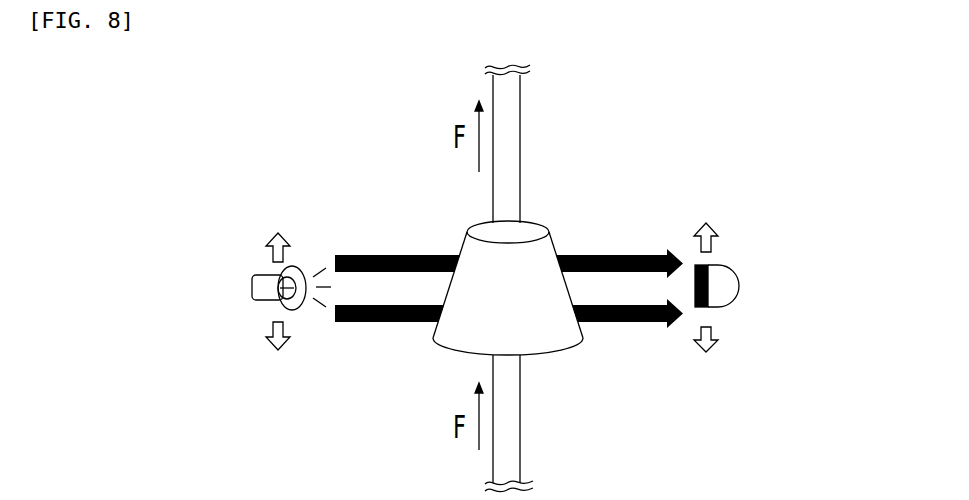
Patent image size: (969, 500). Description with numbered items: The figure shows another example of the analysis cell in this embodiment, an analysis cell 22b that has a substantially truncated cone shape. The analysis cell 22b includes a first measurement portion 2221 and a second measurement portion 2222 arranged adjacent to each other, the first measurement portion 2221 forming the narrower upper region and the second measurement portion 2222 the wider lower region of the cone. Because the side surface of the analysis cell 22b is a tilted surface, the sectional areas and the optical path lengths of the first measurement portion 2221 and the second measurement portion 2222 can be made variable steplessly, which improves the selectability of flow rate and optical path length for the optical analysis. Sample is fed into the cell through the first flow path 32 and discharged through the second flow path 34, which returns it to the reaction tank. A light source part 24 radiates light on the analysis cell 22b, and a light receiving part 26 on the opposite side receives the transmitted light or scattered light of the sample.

The second flow path 34 is at (520, 103).
The first flow path 32 is at (520, 452).
The analysis cell 22b is at (456, 237).
The first measurement portion 2221 is at (547, 246).
The second measurement portion 2222 is at (555, 338).
The light source part 24 is at (252, 289).
The light receiving part 26 is at (737, 295).